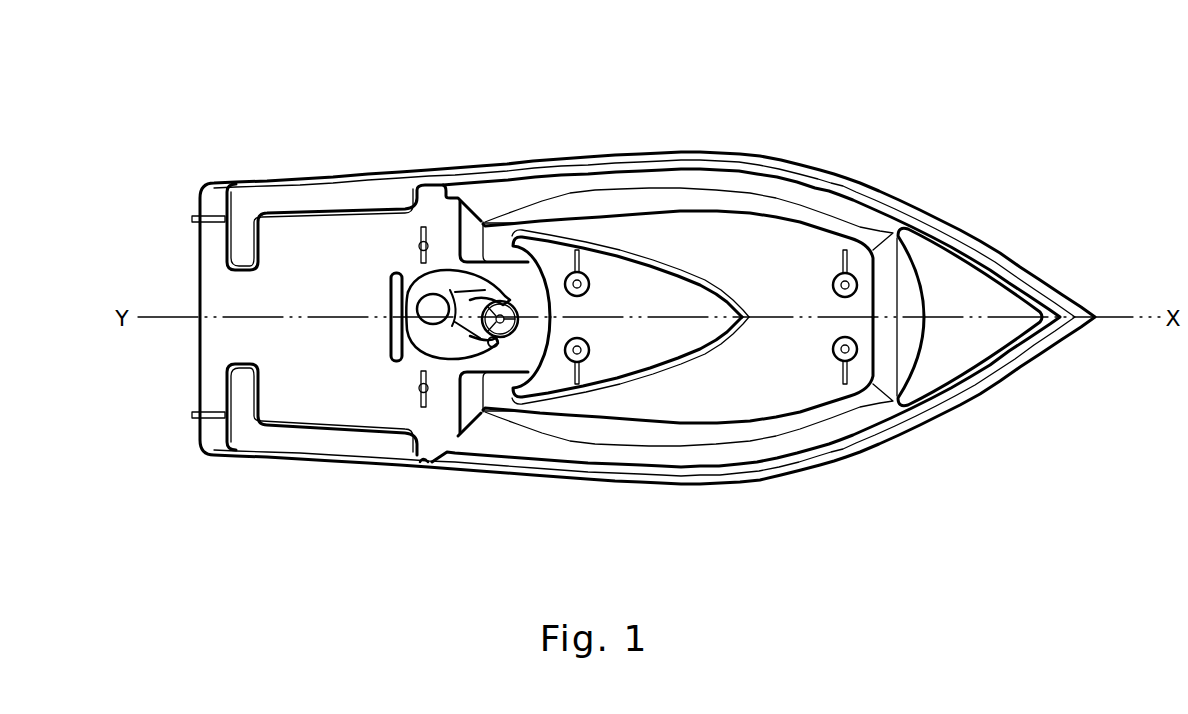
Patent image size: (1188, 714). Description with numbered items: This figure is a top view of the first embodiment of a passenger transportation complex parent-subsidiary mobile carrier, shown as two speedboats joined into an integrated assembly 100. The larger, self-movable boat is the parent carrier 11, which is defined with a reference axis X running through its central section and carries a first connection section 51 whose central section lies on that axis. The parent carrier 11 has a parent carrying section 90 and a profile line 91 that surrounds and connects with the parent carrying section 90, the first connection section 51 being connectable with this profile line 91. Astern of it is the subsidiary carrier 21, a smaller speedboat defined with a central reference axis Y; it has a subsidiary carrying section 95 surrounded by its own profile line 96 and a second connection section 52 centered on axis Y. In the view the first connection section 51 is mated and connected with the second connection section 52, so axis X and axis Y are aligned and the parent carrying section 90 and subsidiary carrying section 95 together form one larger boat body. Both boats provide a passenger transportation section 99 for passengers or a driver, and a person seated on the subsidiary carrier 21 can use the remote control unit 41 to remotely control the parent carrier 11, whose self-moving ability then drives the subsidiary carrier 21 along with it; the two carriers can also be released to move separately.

The integrated assembly 100 is at (567, 133).
The parent carrier 11 is at (851, 178).
The subsidiary carrier 21 is at (323, 178).
The remote control unit 41 is at (508, 300).
The first connection section 51 is at (707, 270).
The second connection section 52 is at (780, 222).
The parent carrying section 90 is at (676, 404).
The profile line 91 is at (481, 418).
The subsidiary carrying section 95 is at (302, 398).
The profile line 96 is at (277, 177).
The passenger transportation section 99 is at (415, 268).